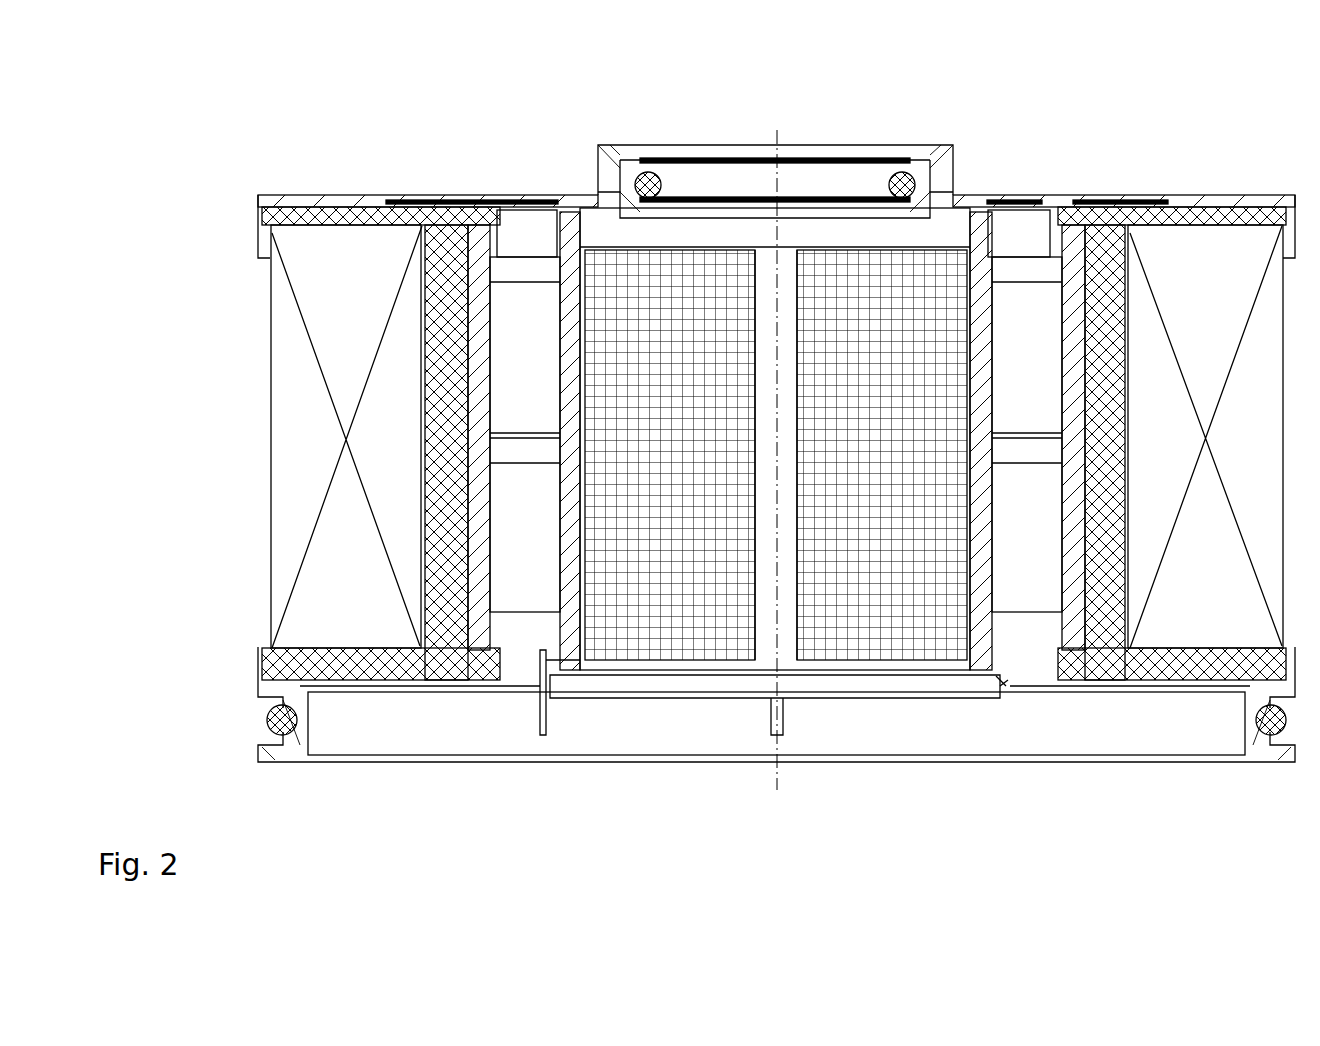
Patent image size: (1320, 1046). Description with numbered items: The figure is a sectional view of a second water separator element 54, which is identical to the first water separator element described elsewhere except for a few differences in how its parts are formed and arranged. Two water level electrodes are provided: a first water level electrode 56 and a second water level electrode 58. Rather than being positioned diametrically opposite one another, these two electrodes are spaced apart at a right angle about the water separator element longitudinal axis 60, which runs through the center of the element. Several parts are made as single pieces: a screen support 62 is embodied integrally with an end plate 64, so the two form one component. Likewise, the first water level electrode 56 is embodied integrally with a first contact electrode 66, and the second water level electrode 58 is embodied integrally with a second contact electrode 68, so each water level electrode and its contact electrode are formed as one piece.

The second water separator element 54 is at (240, 117).
The first water level electrode 56 is at (543, 736).
The second water level electrode 58 is at (783, 728).
The water separator element longitudinal axis 60 is at (777, 140).
The screen support 62 is at (1000, 690).
The end plate 64 is at (1200, 195).
The first contact electrode 66 is at (407, 195).
The second contact electrode 68 is at (1025, 195).